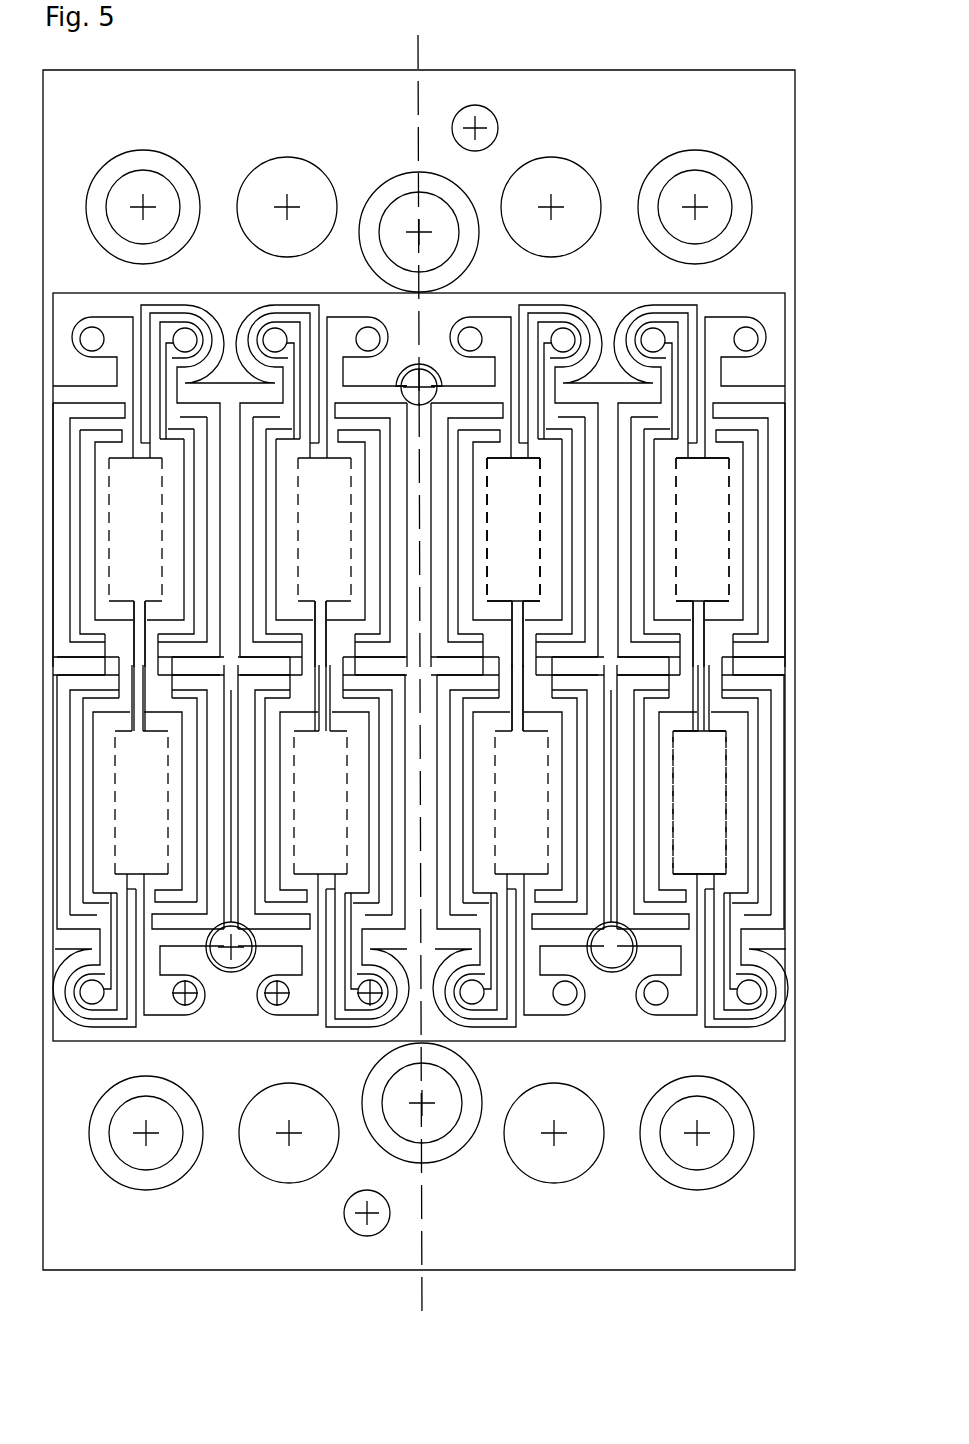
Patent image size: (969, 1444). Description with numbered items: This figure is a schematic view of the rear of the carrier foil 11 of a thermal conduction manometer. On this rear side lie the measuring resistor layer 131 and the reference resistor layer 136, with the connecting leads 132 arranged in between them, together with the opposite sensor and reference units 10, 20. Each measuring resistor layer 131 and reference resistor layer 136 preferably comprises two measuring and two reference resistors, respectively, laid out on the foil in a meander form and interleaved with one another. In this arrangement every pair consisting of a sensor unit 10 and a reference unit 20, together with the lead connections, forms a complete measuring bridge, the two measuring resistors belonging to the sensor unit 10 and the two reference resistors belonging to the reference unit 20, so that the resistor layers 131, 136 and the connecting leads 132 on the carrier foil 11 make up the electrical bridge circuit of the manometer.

The carrier foil 11 is at (777, 397).
The reference unit 20 is at (536, 536).
The sensor unit 10 is at (720, 537).
The reference resistor layer 136 is at (535, 582).
The connecting leads 132 is at (712, 664).
The measuring resistor layer 131 is at (707, 750).